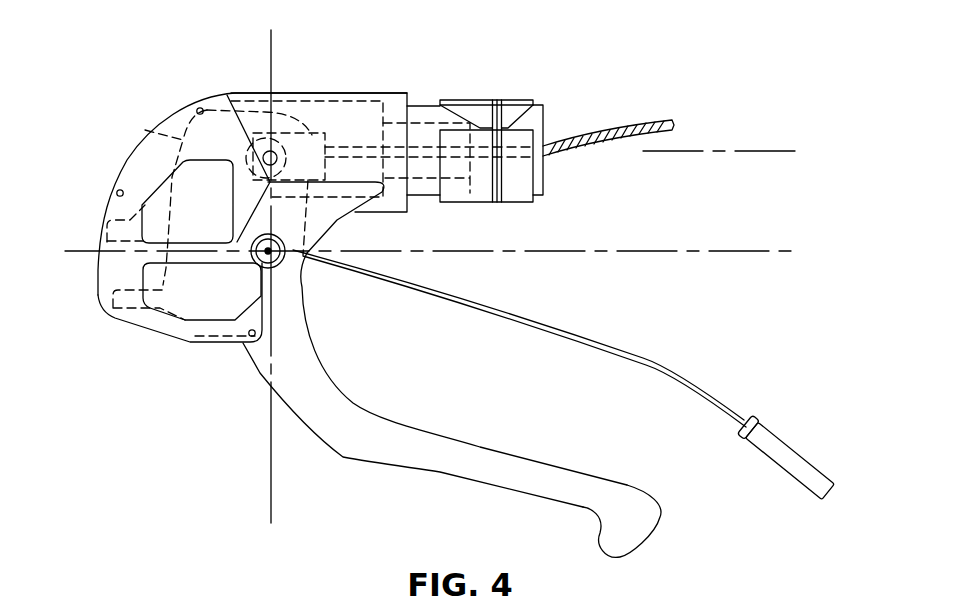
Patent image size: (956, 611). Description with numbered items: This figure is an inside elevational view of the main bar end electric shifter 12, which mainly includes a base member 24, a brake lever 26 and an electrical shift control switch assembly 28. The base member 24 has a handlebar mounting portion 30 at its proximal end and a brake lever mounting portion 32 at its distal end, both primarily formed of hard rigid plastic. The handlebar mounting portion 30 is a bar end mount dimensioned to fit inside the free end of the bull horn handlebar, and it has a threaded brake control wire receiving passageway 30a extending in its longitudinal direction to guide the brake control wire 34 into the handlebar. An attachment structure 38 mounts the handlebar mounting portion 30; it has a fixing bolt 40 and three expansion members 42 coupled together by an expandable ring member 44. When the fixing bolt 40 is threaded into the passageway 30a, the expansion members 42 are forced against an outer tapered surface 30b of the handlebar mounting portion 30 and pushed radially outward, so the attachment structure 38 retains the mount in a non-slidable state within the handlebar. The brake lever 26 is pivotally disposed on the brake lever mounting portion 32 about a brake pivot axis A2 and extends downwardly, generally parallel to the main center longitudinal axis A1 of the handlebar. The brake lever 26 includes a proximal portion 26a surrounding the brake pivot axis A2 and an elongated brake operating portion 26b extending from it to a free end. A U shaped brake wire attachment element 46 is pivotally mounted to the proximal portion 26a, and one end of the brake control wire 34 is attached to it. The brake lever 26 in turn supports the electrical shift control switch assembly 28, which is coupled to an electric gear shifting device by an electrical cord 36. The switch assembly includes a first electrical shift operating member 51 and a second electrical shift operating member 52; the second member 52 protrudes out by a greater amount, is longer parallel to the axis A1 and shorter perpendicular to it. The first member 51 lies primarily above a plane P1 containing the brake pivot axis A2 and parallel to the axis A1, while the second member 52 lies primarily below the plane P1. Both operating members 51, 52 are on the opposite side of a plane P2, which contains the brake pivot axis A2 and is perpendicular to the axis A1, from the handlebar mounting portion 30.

The main bar end electric shifter 12 is at (170, 70).
The base member 24 is at (308, 85).
The brake lever 26 is at (342, 462).
The proximal portion 26a is at (150, 131).
The elongated brake operating portion 26b is at (525, 457).
The electrical shift control switch assembly 28 is at (204, 352).
The handlebar mounting portion 30 is at (422, 186).
The brake control wire receiving passageway 30a is at (349, 103).
The outer tapered surface 30b is at (450, 118).
The brake lever mounting portion 32 is at (330, 226).
The brake control wire 34 is at (643, 126).
The electrical cord 36 is at (643, 358).
The attachment structure 38 is at (527, 217).
The fixing bolt 40 is at (543, 110).
The expansion members 42 is at (517, 99).
The expandable ring member 44 is at (503, 177).
The U shaped brake wire attachment element 46 is at (238, 182).
The first electrical shift operating member 51 is at (158, 177).
The second electrical shift operating member 52 is at (165, 323).
The main center longitudinal axis A1 is at (755, 151).
The brake pivot axis A2 is at (270, 256).
The plane P1 is at (755, 252).
The plane P2 is at (268, 491).